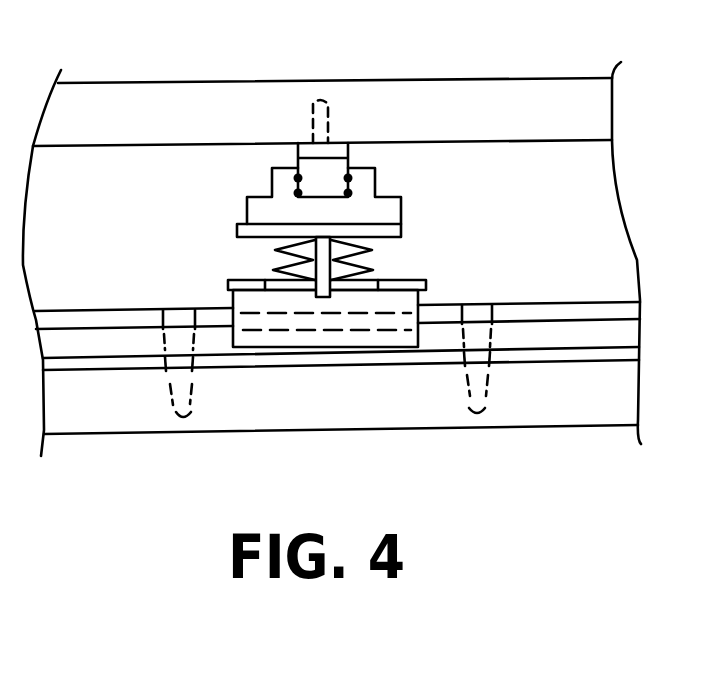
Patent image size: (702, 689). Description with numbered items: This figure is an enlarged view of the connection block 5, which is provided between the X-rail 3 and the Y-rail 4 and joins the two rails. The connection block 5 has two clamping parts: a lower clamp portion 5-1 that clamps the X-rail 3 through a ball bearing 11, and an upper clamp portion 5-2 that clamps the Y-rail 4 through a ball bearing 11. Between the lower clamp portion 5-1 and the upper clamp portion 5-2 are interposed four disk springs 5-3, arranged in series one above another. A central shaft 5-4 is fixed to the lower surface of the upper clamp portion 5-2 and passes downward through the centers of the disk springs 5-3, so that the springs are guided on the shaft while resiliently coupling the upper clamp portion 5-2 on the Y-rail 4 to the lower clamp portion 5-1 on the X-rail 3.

The X-rail 3 is at (581, 317).
The Y-rail 4 is at (328, 172).
The ball bearing 11 is at (298, 176).
The connection block 5 is at (340, 174).
The lower clamp portion 5-1 is at (405, 303).
The upper clamp portion 5-2 is at (373, 119).
The disk springs 5-3 is at (372, 258).
The central shaft 5-4 is at (296, 271).